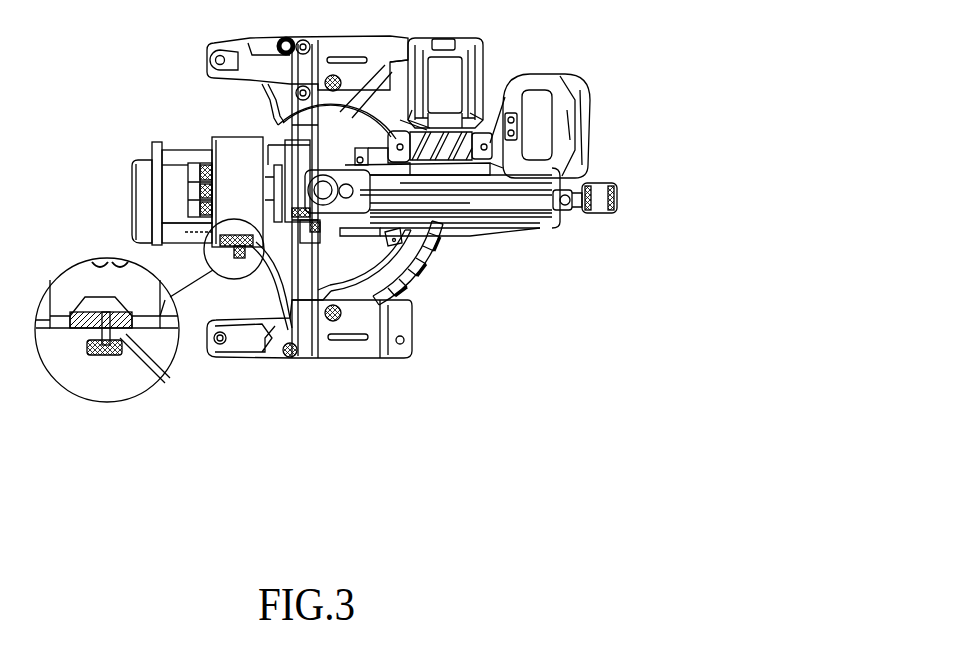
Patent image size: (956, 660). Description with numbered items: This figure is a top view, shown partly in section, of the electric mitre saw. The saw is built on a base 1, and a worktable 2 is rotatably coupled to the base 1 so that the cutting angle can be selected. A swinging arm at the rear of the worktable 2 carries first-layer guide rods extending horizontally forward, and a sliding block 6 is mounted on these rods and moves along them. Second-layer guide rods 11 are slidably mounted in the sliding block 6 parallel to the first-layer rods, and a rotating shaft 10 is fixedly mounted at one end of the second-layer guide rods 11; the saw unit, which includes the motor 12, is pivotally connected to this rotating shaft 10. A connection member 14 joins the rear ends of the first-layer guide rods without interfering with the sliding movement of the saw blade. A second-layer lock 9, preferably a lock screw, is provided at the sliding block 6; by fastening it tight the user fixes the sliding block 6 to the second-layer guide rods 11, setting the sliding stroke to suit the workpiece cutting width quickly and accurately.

The base 1 is at (343, 328).
The worktable 2 is at (365, 248).
The sliding block 6 is at (203, 165).
The second-layer lock 9 is at (112, 358).
The rotating shaft 10 is at (267, 185).
The second-layer guide rods 11 is at (183, 157).
The motor 12 is at (445, 90).
The connection member 14 is at (157, 192).